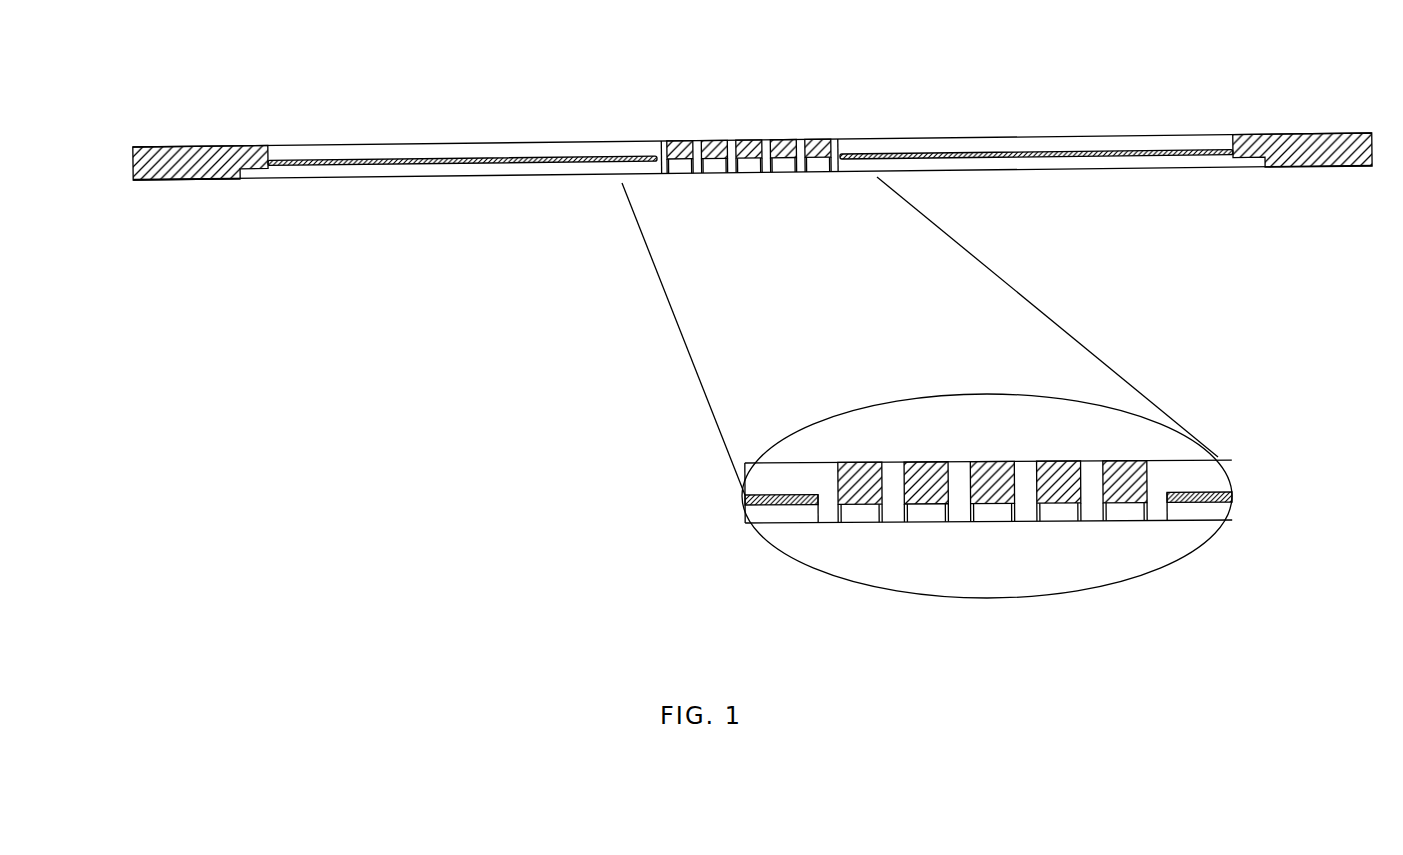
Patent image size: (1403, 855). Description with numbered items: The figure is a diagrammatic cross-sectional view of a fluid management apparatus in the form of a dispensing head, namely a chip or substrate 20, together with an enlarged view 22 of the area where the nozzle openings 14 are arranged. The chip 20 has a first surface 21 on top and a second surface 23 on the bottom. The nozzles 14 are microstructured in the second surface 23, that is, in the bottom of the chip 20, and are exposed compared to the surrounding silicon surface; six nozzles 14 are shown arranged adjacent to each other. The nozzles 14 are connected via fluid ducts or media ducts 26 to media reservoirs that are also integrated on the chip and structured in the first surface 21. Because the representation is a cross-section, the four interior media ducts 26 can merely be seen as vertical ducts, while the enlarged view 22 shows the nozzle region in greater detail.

The chip 20 is at (1296, 150).
The first surface 21 is at (215, 145).
The second surface 23 is at (212, 181).
The nozzle openings 14 is at (661, 173).
The media ducts 26 is at (797, 475).
The enlarged view 22 is at (890, 594).